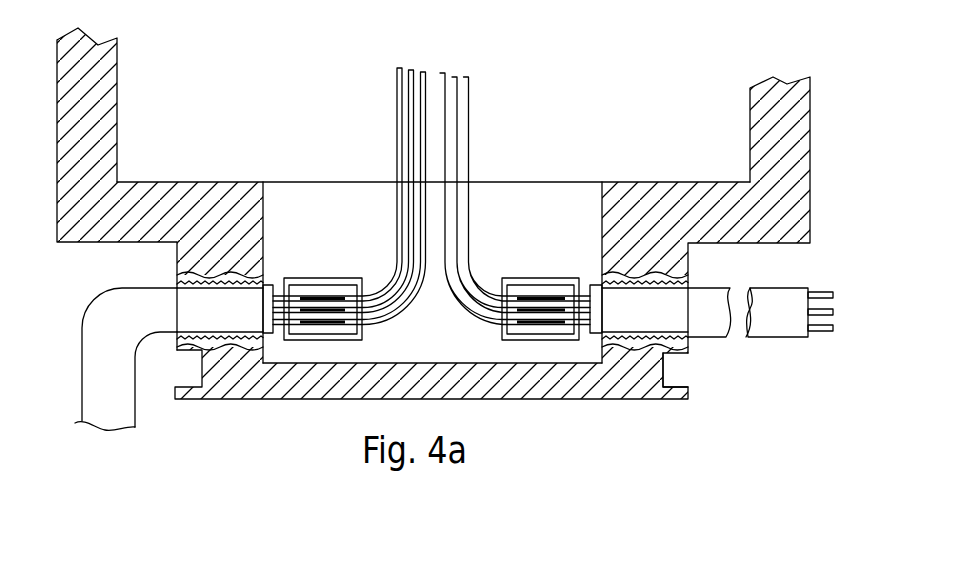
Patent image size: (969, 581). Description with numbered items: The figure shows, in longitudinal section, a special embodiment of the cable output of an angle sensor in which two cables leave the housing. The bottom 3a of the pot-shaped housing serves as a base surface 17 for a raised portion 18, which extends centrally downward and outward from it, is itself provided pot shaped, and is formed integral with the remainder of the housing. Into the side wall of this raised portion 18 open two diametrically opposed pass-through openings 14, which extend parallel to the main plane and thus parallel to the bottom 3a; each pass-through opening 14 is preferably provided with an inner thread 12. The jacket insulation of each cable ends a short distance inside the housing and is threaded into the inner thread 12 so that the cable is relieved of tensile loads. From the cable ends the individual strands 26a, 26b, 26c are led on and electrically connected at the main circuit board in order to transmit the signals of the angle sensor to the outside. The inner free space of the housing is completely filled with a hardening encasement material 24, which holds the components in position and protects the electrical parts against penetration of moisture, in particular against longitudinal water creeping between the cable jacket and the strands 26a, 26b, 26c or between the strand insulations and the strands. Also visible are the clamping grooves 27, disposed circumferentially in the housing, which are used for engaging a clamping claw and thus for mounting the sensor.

The bottom 3a is at (718, 205).
The inner thread 12 is at (431, 207).
The pass-through opening 14 is at (195, 273).
The base surface 17 is at (85, 240).
The raised portion 18 is at (243, 387).
The encasement material 24 is at (506, 217).
The strand 26a is at (398, 123).
The strand 26b is at (412, 88).
The strand 26c is at (421, 85).
The clamping groove 27 is at (665, 372).